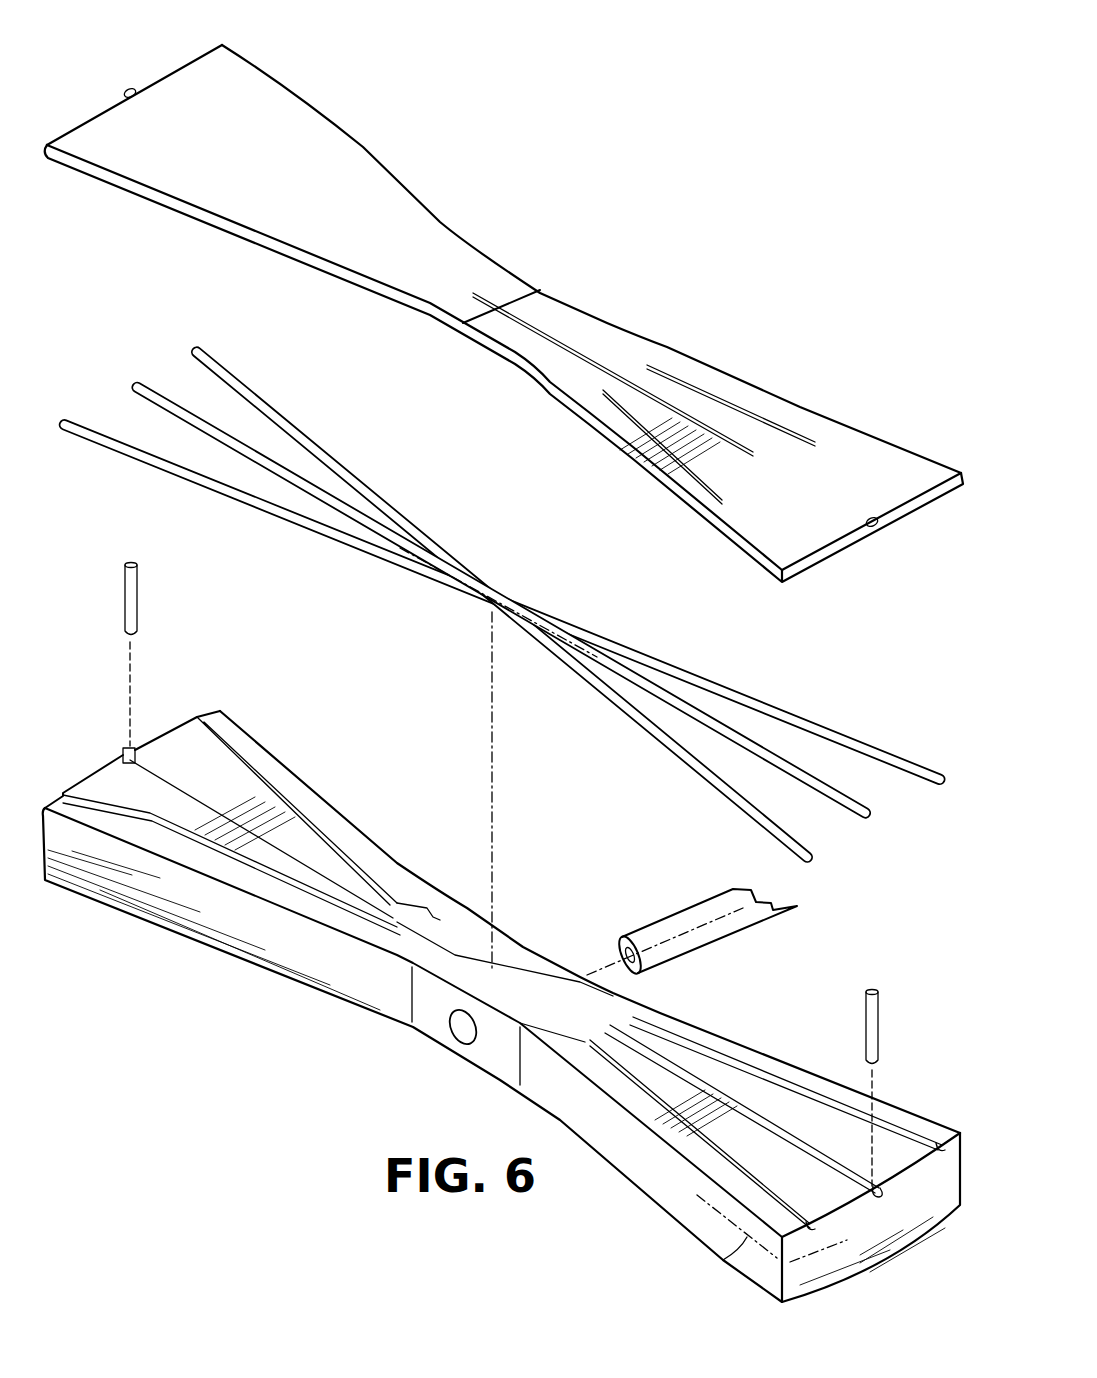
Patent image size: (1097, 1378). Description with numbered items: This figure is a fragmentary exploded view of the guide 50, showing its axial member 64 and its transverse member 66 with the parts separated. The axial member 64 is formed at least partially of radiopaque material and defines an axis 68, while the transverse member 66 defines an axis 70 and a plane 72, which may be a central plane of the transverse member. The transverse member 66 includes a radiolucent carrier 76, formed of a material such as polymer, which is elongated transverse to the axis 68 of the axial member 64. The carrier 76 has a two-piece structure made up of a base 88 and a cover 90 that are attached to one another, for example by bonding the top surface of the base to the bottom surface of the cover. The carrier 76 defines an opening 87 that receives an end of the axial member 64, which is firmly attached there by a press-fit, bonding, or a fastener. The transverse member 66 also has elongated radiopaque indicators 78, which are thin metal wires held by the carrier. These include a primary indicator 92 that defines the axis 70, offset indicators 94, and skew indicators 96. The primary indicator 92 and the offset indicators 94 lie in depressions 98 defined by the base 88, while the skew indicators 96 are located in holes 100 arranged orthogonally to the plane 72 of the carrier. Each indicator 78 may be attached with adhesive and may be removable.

The guide 50 is at (662, 110).
The cover 90 is at (265, 73).
The radiolucent carrier 76 is at (370, 150).
The transverse member 66 is at (755, 380).
The holes 100 is at (130, 88).
The offset indicators 94 is at (81, 420).
The primary indicator 92 is at (153, 387).
The radiopaque indicators 78 is at (291, 540).
The axis 70 is at (500, 599).
The skew indicators 96 is at (124, 597).
The axial member 64 is at (715, 946).
The axis 68 is at (705, 925).
The base 88 is at (90, 773).
The depressions 98 is at (107, 806).
The opening 87 is at (466, 1030).
The plane 72 is at (747, 1235).